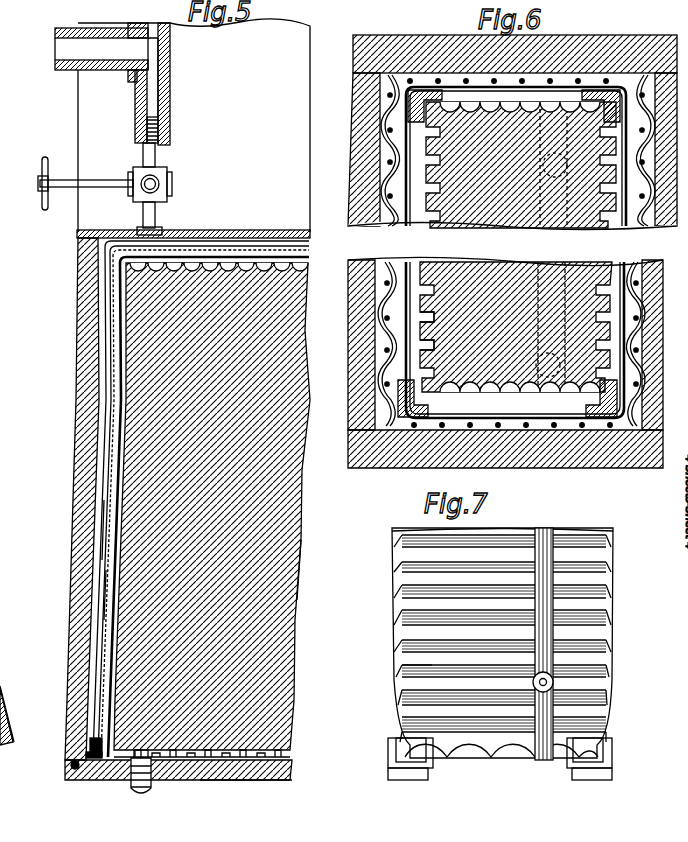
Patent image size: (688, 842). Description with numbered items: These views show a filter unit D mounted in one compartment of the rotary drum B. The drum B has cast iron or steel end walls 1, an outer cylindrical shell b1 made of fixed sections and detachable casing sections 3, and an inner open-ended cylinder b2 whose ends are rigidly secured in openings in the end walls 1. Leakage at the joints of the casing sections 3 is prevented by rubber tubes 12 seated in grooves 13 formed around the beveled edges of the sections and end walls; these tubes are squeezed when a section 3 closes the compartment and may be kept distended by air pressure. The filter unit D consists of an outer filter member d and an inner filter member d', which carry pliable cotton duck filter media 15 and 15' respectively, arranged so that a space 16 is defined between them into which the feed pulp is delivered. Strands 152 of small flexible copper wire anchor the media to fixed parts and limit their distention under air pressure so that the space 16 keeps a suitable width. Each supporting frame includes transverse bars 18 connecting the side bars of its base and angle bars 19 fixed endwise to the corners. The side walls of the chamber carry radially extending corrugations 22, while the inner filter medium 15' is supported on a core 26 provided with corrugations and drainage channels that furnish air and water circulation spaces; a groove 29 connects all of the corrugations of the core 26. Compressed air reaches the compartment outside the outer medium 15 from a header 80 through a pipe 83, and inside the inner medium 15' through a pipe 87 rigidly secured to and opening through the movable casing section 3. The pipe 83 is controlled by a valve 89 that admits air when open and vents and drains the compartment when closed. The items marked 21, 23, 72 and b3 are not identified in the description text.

In FIG. 5, the end wall 1 is at (72, 490).
In FIG. 5, the casing section 3 is at (290, 780).
In FIG. 5, the rubber tube 12 is at (71, 766).
In FIG. 5, the groove 13 is at (86, 757).
In FIG. 5, the filter medium 15 is at (71, 530).
In FIG. 6, the filter medium 15 is at (464, 380).
In FIG. 7, the filter medium 15 is at (480, 646).
In FIG. 5, the filter medium 15' is at (65, 595).
In FIG. 6, the filter medium 15' is at (420, 319).
In FIG. 7, the filter medium 15' is at (496, 662).
In FIG. 6, the strand 152 is at (422, 287).
In FIG. 5, the space 16 is at (111, 370).
In FIG. 6, the space 16 is at (548, 98).
In FIG. 5, the transverse bar 18 is at (90, 746).
In FIG. 6, the angle bar 19 is at (628, 425).
In FIG. 7, the angle bar 19 is at (405, 780).
In FIG. 7, the sheet edge 21 is at (398, 620).
In FIG. 6, the corrugation 22 is at (383, 185).
In FIG. 6, the corner retaining block 23 is at (409, 90).
In FIG. 5, the core 26 is at (287, 565).
In FIG. 6, the core 26 is at (535, 285).
In FIG. 7, the core 26 is at (582, 563).
In FIG. 5, the groove 29 is at (172, 760).
In FIG. 7, the groove 29 is at (548, 640).
In FIG. 5, the clamp arm 72 is at (64, 70).
In FIG. 5, the header 80 is at (135, 115).
In FIG. 5, the pipe 83 is at (143, 155).
In FIG. 5, the pipe 87 is at (131, 790).
In FIG. 6, the pipe 87 is at (543, 168).
In FIG. 5, the valve 89 is at (133, 180).
In FIG. 6, the drum B is at (515, 44).
In FIG. 5, the filter unit D is at (121, 328).
In FIG. 5, the outer filter member d is at (166, 498).
In FIG. 6, the outer filter member d is at (473, 257).
In FIG. 5, the inner filter member d' is at (171, 503).
In FIG. 6, the inner filter member d' is at (520, 299).
In FIG. 5, the outer cylindrical shell b1 is at (292, 777).
In FIG. 5, the inner open-ended cylinder b2 is at (95, 232).
In FIG. 5, the side plate b3 is at (13, 656).
In FIG. 6, the side plate b3 is at (360, 390).